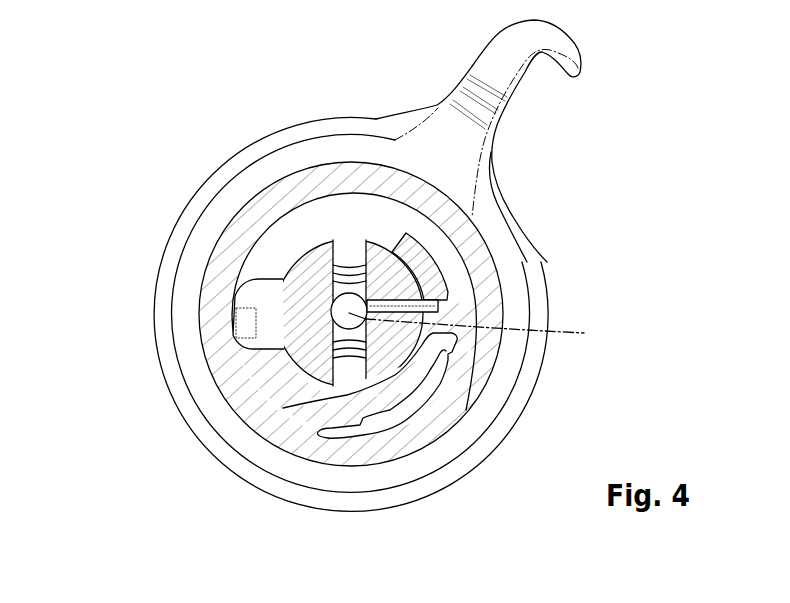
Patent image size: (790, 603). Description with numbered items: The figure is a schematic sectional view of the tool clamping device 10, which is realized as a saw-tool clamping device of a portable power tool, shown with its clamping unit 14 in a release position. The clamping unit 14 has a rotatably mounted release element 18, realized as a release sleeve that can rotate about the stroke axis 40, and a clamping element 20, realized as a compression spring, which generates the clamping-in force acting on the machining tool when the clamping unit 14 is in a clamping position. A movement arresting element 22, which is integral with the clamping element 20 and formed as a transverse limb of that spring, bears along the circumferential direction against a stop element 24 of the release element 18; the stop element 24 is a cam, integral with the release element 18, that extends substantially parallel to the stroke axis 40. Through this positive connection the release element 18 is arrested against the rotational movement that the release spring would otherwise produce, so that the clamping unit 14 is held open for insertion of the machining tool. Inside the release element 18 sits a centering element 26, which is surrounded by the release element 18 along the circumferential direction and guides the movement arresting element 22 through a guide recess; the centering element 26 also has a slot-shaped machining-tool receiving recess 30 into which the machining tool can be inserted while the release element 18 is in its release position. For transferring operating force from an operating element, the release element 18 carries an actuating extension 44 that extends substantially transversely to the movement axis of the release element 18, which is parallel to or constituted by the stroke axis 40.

The tool clamping device 10 is at (120, 119).
The clamping unit 14 is at (379, 255).
The release element 18 is at (500, 392).
The clamping element 20 is at (343, 340).
The movement arresting element 22 is at (440, 305).
The stop element 24 is at (425, 262).
The centering element 26 is at (307, 352).
The machining-tool receiving recess 30 is at (345, 279).
The stroke axis 40 is at (481, 328).
The actuating extension 44 is at (488, 62).